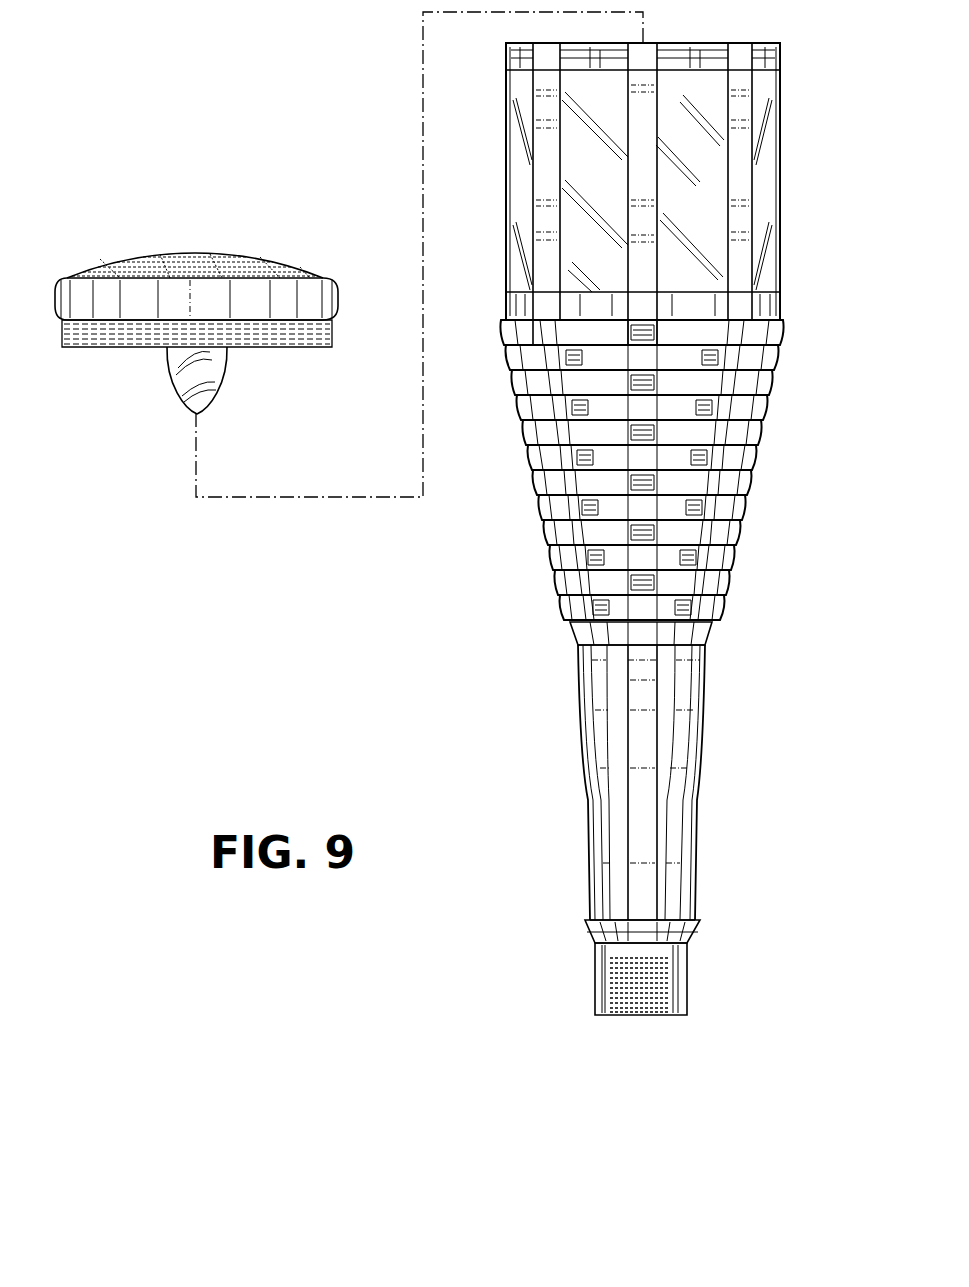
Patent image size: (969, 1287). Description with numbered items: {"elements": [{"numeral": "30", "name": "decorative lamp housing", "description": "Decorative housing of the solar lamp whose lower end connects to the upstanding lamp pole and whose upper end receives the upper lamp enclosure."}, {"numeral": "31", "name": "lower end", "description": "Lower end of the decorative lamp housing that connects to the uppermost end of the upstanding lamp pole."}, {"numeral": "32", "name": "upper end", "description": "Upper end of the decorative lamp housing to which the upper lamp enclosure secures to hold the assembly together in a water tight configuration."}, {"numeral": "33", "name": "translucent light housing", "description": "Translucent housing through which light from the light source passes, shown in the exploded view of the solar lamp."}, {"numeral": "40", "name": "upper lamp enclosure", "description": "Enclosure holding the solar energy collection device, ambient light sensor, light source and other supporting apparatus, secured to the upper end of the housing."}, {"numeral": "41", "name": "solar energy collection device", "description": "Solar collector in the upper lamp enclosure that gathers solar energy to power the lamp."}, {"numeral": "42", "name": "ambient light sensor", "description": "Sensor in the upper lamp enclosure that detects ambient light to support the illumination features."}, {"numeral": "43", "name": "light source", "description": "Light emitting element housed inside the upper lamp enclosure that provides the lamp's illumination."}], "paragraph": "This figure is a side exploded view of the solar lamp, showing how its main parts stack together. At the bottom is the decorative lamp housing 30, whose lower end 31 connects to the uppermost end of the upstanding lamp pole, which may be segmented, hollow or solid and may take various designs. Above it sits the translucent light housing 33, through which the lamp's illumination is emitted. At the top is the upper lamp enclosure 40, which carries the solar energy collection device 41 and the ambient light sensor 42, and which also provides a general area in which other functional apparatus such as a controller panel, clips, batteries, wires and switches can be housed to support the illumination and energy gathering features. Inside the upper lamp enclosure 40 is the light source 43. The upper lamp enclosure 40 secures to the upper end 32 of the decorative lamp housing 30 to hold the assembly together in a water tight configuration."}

The tube assembly 30 is at (795, 500).
The threaded base connector 31 is at (660, 1013).
The top ring of cage 32 is at (753, 43).
The cage panel 33 is at (758, 177).
The cap assembly 40 is at (81, 247).
The cap rim 41 is at (283, 258).
The mesh dome 42 is at (192, 254).
The teardrop plug 43 is at (225, 370).